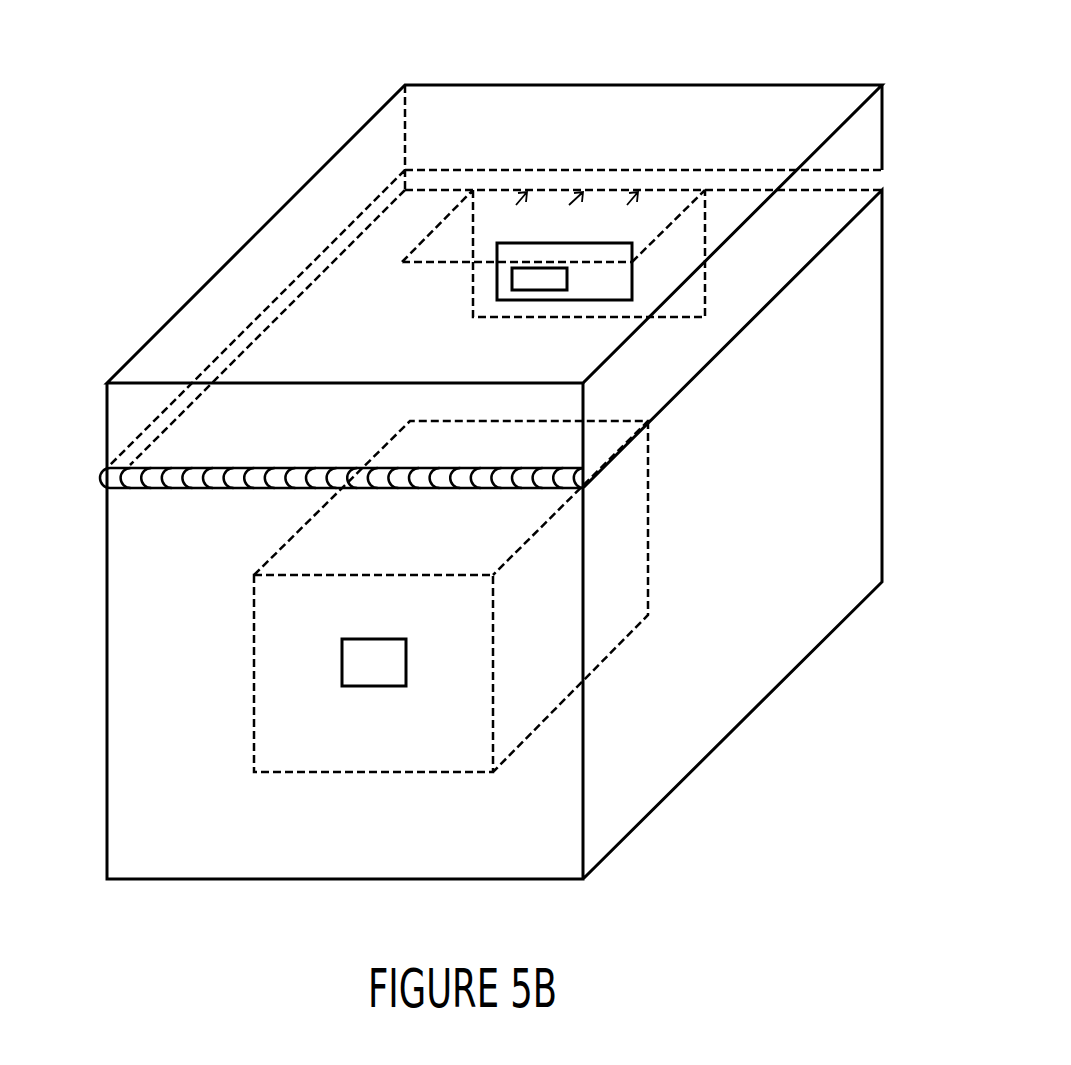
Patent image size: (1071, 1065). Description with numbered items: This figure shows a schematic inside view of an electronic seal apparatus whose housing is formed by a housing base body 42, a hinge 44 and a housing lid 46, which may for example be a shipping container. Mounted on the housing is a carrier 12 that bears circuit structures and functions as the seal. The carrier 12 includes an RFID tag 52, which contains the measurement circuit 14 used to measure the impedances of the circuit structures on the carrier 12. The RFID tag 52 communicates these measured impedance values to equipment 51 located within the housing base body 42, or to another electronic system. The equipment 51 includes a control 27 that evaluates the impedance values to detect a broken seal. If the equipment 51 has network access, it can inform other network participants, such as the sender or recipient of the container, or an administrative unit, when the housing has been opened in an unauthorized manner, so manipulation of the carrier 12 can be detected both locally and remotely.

The carrier 12 is at (428, 232).
The measurement circuit 14 is at (538, 290).
The control 27 is at (406, 663).
The housing base body 42 is at (862, 362).
The hinge 44 is at (102, 471).
The housing lid 46 is at (643, 102).
The equipment 51 is at (363, 778).
The RFID tag 52 is at (497, 283).